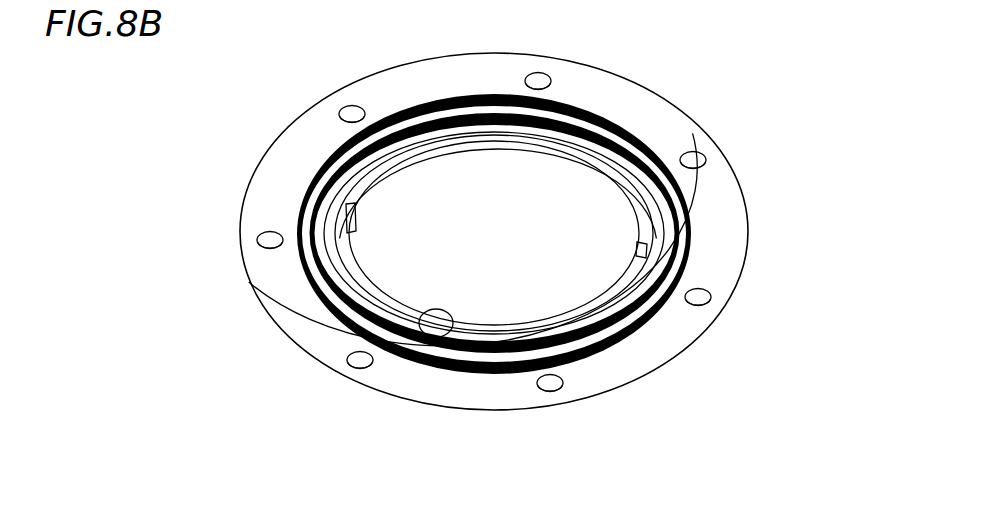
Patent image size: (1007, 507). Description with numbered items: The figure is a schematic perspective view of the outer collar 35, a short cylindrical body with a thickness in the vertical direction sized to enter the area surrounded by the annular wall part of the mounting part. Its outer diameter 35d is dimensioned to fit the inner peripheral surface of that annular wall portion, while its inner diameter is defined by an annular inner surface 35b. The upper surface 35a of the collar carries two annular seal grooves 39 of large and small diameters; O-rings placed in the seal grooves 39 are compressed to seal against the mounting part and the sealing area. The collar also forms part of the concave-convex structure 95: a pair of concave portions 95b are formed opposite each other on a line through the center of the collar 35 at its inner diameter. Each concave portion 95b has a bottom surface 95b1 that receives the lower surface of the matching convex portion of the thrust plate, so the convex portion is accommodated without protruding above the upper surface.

The outer collar 35 is at (664, 392).
The upper surface 35a is at (290, 308).
The annular inner surface 35b is at (440, 348).
The outer diameter 35d is at (518, 411).
The annular seal groove 39 is at (663, 202).
The concave-convex structure 95 is at (512, 224).
The concave portion 95b is at (318, 190).
The bottom surface 95b1 is at (356, 212).